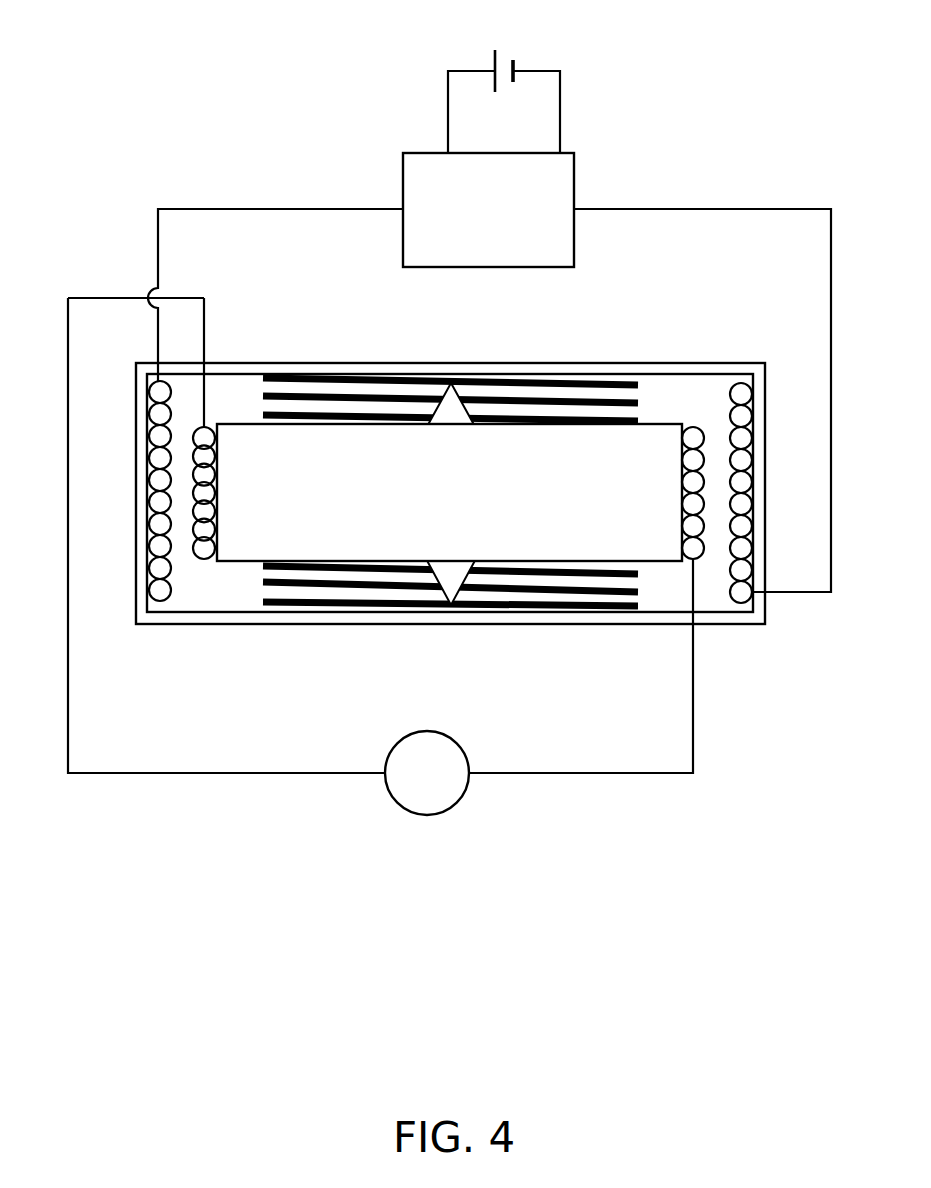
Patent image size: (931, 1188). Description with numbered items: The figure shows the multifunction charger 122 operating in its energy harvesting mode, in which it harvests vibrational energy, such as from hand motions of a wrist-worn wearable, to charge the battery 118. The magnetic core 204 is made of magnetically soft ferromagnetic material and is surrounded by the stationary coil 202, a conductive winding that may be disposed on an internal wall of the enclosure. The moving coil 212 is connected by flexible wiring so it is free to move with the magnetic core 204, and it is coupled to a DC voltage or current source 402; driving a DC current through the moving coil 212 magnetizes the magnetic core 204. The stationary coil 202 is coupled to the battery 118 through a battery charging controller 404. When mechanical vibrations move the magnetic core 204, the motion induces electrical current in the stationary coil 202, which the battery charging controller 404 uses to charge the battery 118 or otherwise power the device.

The battery 118 is at (482, 39).
The battery charging controller 404 is at (575, 172).
The multifunction charger 122 is at (597, 363).
The magnetic core 204 is at (650, 424).
The stationary coil 202 is at (160, 601).
The moving coil 212 is at (204, 559).
The DC voltage or current source 402 is at (446, 735).